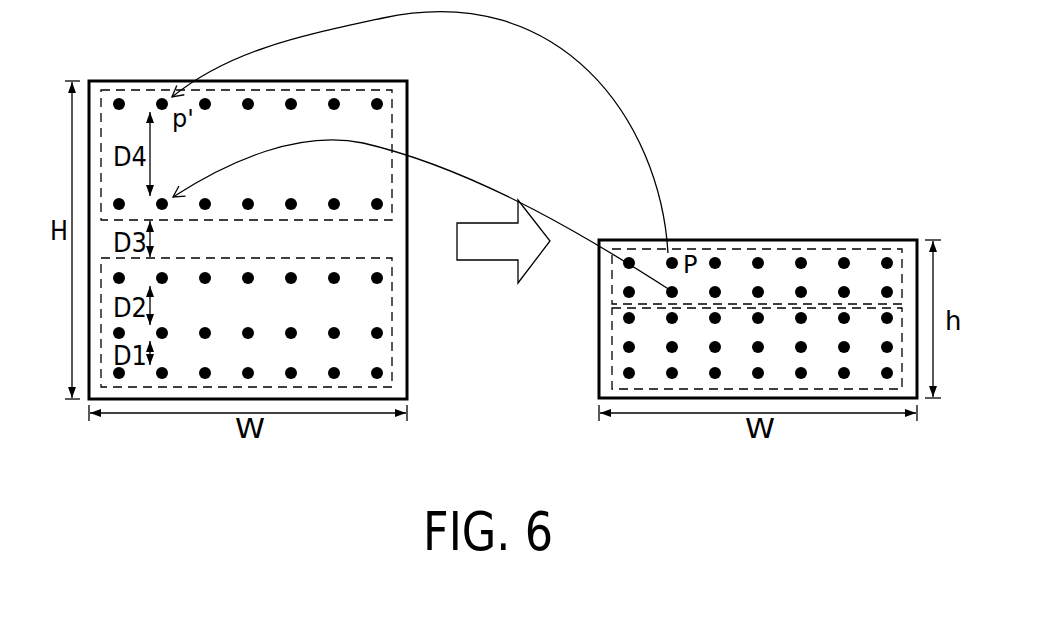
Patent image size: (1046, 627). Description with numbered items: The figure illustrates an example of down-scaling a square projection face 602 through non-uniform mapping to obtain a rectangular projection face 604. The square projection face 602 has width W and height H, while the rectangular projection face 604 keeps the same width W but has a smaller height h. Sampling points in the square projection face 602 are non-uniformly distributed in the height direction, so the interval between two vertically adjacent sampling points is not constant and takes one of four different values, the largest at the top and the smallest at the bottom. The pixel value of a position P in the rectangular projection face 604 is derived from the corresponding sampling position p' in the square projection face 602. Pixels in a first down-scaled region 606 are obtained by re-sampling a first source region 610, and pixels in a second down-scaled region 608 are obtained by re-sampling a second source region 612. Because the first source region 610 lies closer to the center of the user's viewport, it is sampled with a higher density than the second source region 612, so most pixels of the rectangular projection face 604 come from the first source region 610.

The square projection face 602 is at (147, 80).
The rectangular projection face 604 is at (830, 239).
The first down-scaled region 606 is at (611, 347).
The second down-scaled region 608 is at (611, 284).
The first source region 610 is at (392, 312).
The second source region 612 is at (392, 166).